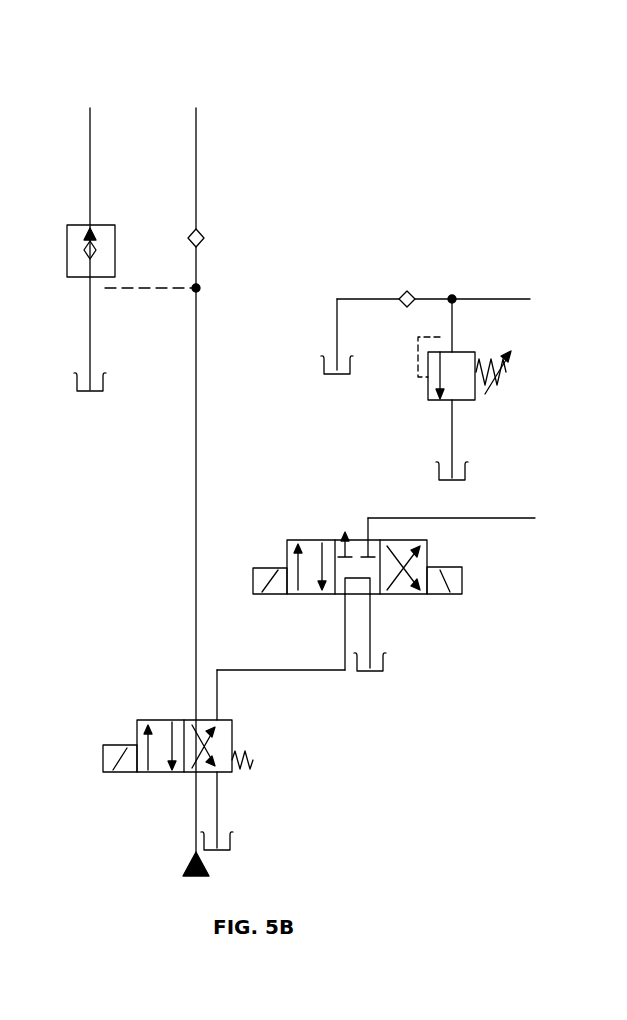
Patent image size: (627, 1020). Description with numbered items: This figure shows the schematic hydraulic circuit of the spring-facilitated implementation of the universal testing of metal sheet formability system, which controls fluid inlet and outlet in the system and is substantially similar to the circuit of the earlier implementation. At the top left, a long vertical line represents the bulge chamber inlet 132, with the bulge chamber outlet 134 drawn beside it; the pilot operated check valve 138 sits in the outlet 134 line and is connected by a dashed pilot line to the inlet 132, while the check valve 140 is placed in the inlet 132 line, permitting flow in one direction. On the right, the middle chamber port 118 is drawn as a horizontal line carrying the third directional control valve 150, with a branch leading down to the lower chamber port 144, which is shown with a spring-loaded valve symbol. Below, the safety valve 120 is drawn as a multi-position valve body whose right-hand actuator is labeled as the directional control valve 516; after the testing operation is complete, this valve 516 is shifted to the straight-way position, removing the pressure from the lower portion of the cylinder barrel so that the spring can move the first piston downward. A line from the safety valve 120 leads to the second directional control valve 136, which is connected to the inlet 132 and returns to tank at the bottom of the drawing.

The middle chamber port 118 is at (448, 332).
The safety valve 120 is at (400, 597).
The bulge chamber inlet 132 is at (188, 479).
The bulge chamber outlet 134 is at (96, 237).
The second directional control valve 136 is at (253, 763).
The pilot operated check valve 138 is at (77, 223).
The check valve 140 is at (210, 229).
The lower chamber port 144 is at (460, 400).
The third directional control valve 150 is at (408, 285).
The directional control valve 516 is at (423, 595).